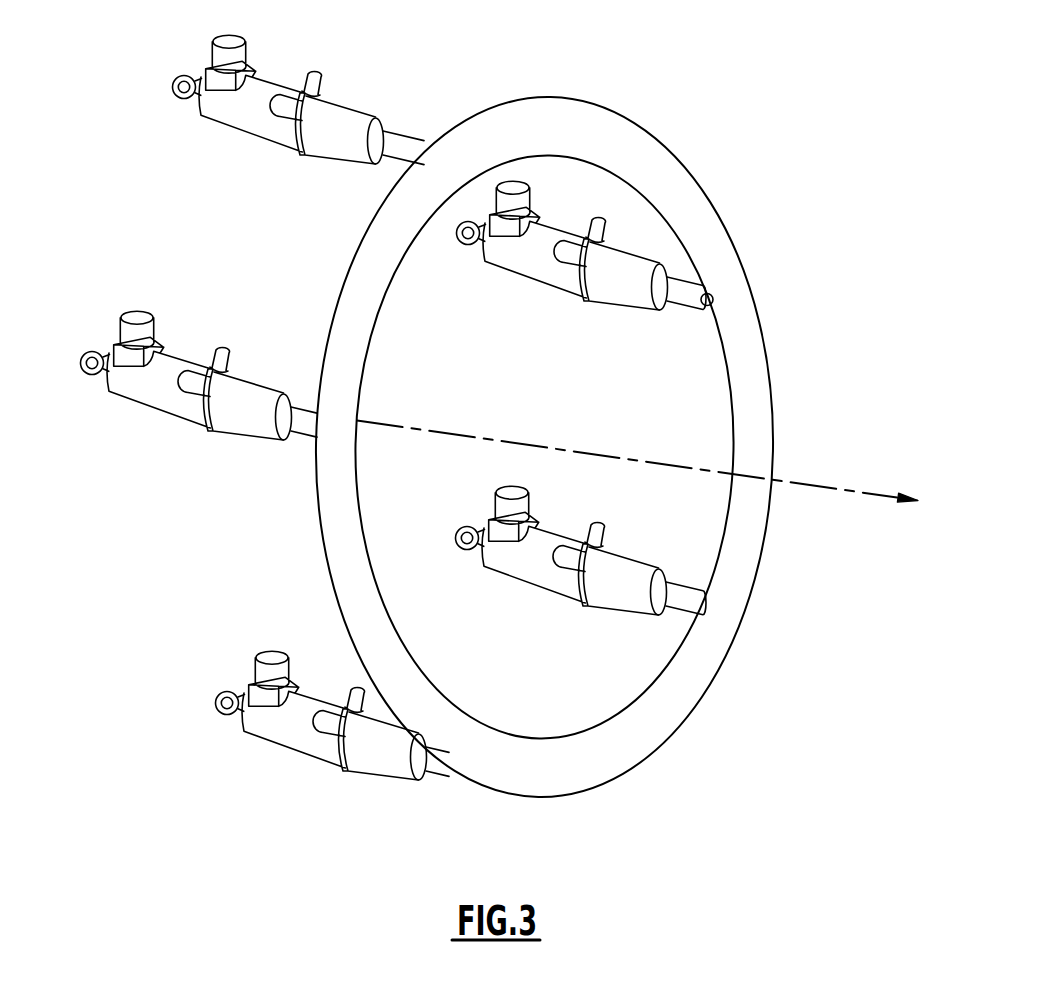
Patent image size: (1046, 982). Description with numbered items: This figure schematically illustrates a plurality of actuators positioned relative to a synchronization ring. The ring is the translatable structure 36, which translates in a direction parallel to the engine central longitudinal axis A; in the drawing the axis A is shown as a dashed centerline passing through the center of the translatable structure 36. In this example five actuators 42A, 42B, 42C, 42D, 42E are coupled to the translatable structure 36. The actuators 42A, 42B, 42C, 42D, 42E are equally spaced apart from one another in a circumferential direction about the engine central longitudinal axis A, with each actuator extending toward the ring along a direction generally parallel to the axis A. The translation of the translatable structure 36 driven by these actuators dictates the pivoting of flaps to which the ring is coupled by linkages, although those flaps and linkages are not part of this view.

The translatable structure 36 is at (657, 170).
The actuator 42A is at (334, 86).
The actuator 42B is at (241, 362).
The actuator 42C is at (316, 678).
The actuator 42D is at (615, 537).
The actuator 42E is at (529, 297).
The engine central longitudinal axis A is at (835, 485).